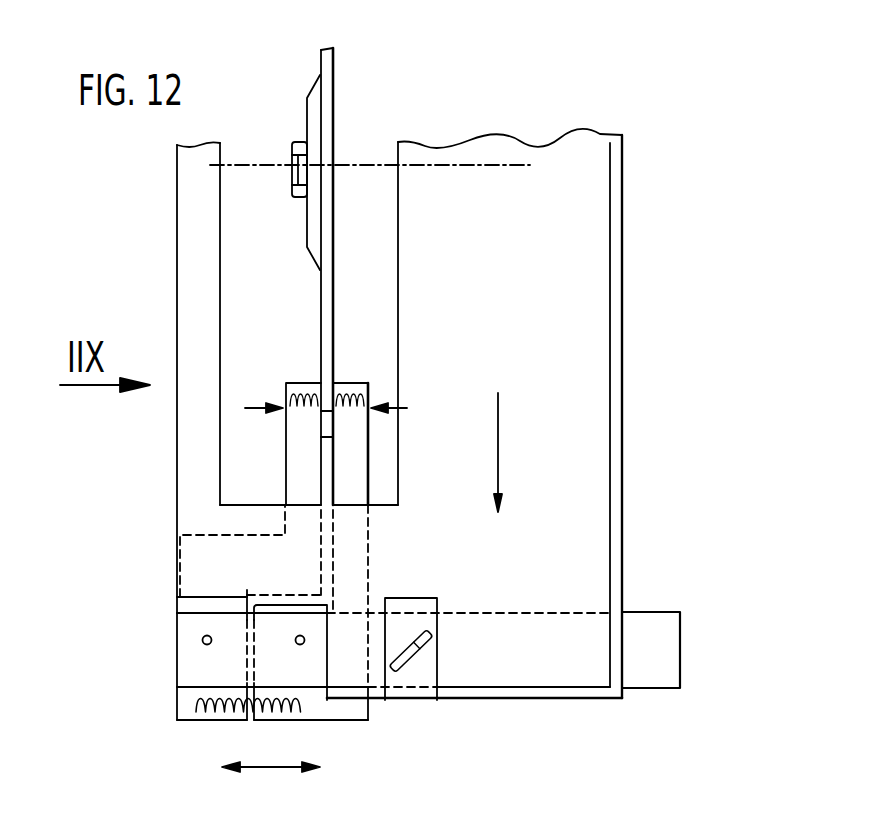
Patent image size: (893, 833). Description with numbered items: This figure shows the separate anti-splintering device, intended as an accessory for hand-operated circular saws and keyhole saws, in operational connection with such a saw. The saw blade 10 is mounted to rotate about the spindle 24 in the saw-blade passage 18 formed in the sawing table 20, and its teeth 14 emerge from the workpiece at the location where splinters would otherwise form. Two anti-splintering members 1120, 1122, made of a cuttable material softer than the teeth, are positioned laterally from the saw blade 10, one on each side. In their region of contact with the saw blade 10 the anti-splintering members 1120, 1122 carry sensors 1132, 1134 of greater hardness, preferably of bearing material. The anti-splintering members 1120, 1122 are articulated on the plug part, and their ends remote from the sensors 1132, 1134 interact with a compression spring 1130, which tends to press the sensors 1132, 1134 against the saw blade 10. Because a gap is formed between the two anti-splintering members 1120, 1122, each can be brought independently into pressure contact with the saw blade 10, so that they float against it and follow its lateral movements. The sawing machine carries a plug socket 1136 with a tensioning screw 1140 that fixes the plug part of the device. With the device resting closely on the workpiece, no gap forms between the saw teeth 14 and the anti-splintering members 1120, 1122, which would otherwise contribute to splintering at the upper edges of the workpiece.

The saw blade 10 is at (333, 332).
The teeth 14 is at (320, 426).
The saw-blade passage 18 is at (398, 232).
The sawing table 20 is at (615, 310).
The spindle 24 is at (510, 162).
The anti-splintering member 1120 is at (365, 462).
The anti-splintering member 1122 is at (300, 472).
The compression spring 1130 is at (197, 718).
The sensor 1132 is at (358, 385).
The sensor 1134 is at (300, 387).
The plug socket 1136 is at (437, 675).
The tensioning screw 1140 is at (437, 647).